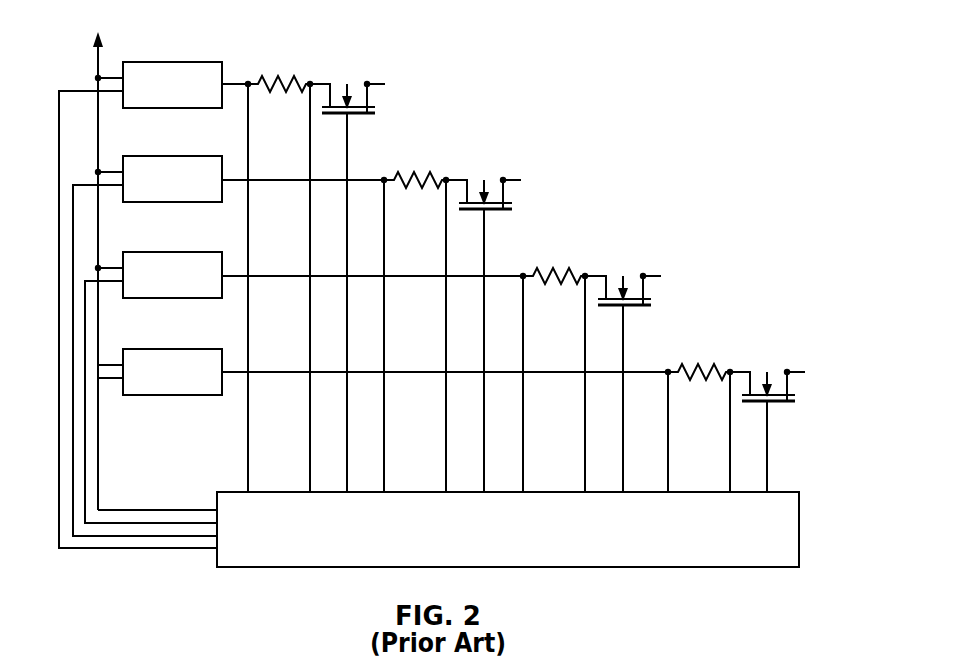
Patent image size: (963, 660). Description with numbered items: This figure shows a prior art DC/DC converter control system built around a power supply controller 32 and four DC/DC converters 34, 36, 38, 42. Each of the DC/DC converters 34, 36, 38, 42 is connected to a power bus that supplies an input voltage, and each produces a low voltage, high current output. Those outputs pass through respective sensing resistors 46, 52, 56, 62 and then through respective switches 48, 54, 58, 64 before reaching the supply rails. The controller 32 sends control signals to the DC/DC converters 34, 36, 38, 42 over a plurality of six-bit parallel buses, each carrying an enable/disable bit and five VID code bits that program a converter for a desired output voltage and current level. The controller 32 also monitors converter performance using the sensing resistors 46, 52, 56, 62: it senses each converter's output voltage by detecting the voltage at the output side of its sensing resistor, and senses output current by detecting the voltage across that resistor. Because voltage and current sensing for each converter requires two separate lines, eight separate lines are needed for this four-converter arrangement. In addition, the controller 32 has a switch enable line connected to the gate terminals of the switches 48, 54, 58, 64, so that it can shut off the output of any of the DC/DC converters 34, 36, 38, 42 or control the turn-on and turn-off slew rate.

The power supply controller 32 is at (799, 529).
The DC/DC converter 34 is at (172, 60).
The DC/DC converter 36 is at (172, 154).
The DC/DC converter 38 is at (172, 250).
The DC/DC converter 42 is at (172, 347).
The sensing resistor 46 is at (283, 94).
The switch 48 is at (378, 111).
The sensing resistor 52 is at (419, 190).
The switch 54 is at (515, 207).
The sensing resistor 56 is at (558, 286).
The switch 58 is at (654, 303).
The sensing resistor 62 is at (703, 382).
The switch 64 is at (798, 399).